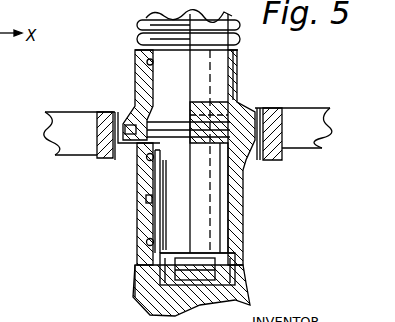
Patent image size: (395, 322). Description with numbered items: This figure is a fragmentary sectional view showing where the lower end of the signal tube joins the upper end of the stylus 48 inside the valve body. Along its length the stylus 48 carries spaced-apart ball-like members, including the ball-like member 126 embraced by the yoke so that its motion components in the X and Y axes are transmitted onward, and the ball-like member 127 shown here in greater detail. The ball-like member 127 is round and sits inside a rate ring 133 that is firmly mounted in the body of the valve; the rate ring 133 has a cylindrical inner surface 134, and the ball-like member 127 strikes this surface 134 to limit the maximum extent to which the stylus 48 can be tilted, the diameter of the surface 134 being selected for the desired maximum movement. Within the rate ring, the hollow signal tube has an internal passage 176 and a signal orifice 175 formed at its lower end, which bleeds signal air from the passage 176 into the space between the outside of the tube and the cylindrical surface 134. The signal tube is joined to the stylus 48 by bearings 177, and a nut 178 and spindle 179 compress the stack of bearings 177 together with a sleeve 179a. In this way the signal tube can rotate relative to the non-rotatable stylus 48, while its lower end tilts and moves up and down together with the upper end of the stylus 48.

The stylus 48 is at (245, 251).
The ball-like member 126 is at (138, 293).
The ball-like member 127 is at (133, 152).
The rate ring 133 is at (105, 112).
The cylindrical inner surface 134 is at (257, 108).
The signal orifice 175 is at (128, 132).
The internal passage 176 is at (137, 62).
The bearings 177 is at (146, 162).
The nut 178 is at (226, 268).
The spindle 179 is at (160, 224).
The sleeve 179a is at (172, 218).